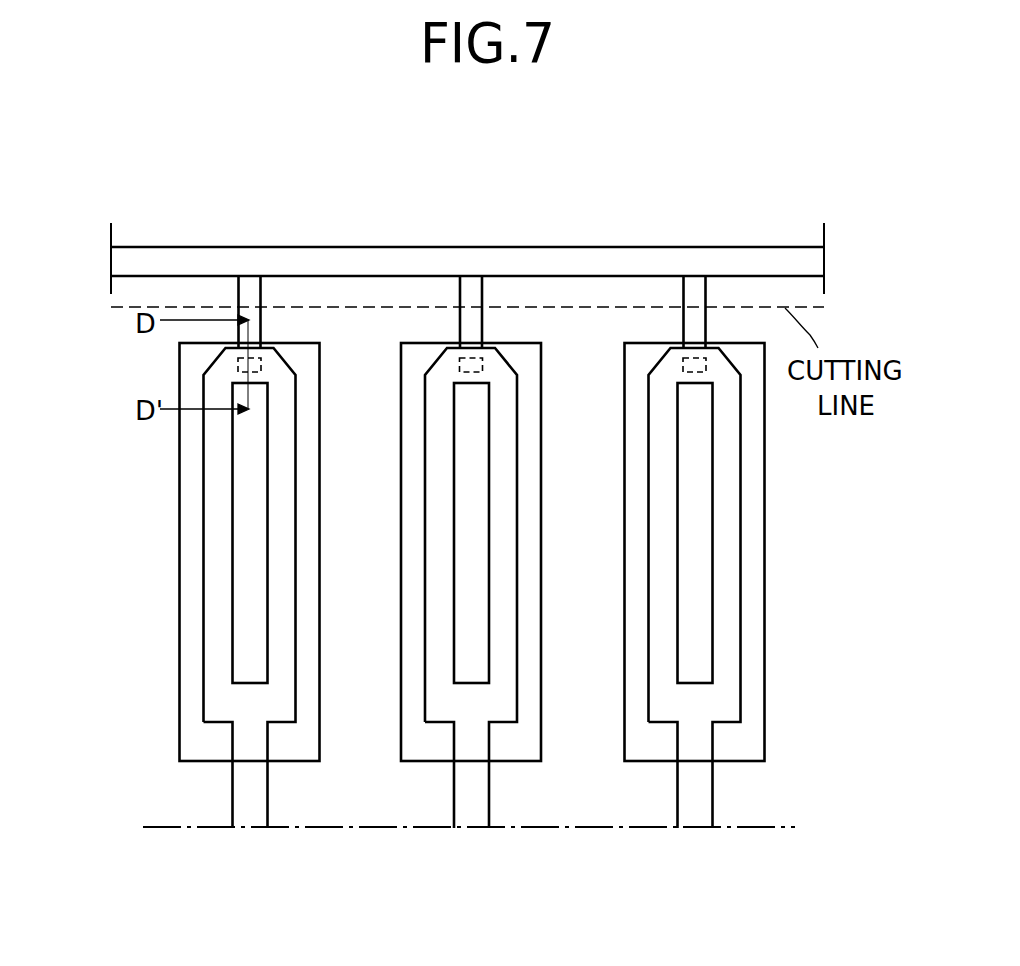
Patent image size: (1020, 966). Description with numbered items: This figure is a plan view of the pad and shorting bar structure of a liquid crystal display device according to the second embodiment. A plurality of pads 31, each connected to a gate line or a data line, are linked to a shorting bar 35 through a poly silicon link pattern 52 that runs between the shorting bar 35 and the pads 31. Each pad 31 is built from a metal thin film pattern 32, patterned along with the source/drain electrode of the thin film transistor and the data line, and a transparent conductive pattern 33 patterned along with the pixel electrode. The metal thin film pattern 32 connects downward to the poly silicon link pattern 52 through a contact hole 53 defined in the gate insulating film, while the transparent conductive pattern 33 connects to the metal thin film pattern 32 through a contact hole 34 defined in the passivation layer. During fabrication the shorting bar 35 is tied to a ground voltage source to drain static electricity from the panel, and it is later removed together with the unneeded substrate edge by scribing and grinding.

The pad 31 is at (247, 496).
The metal thin film pattern 32 is at (202, 437).
The transparent conductive pattern 33 is at (180, 494).
The contact hole 34 is at (232, 537).
The shorting bar 35 is at (631, 247).
The poly silicon link pattern 52 is at (261, 307).
The contact hole 53 is at (259, 363).